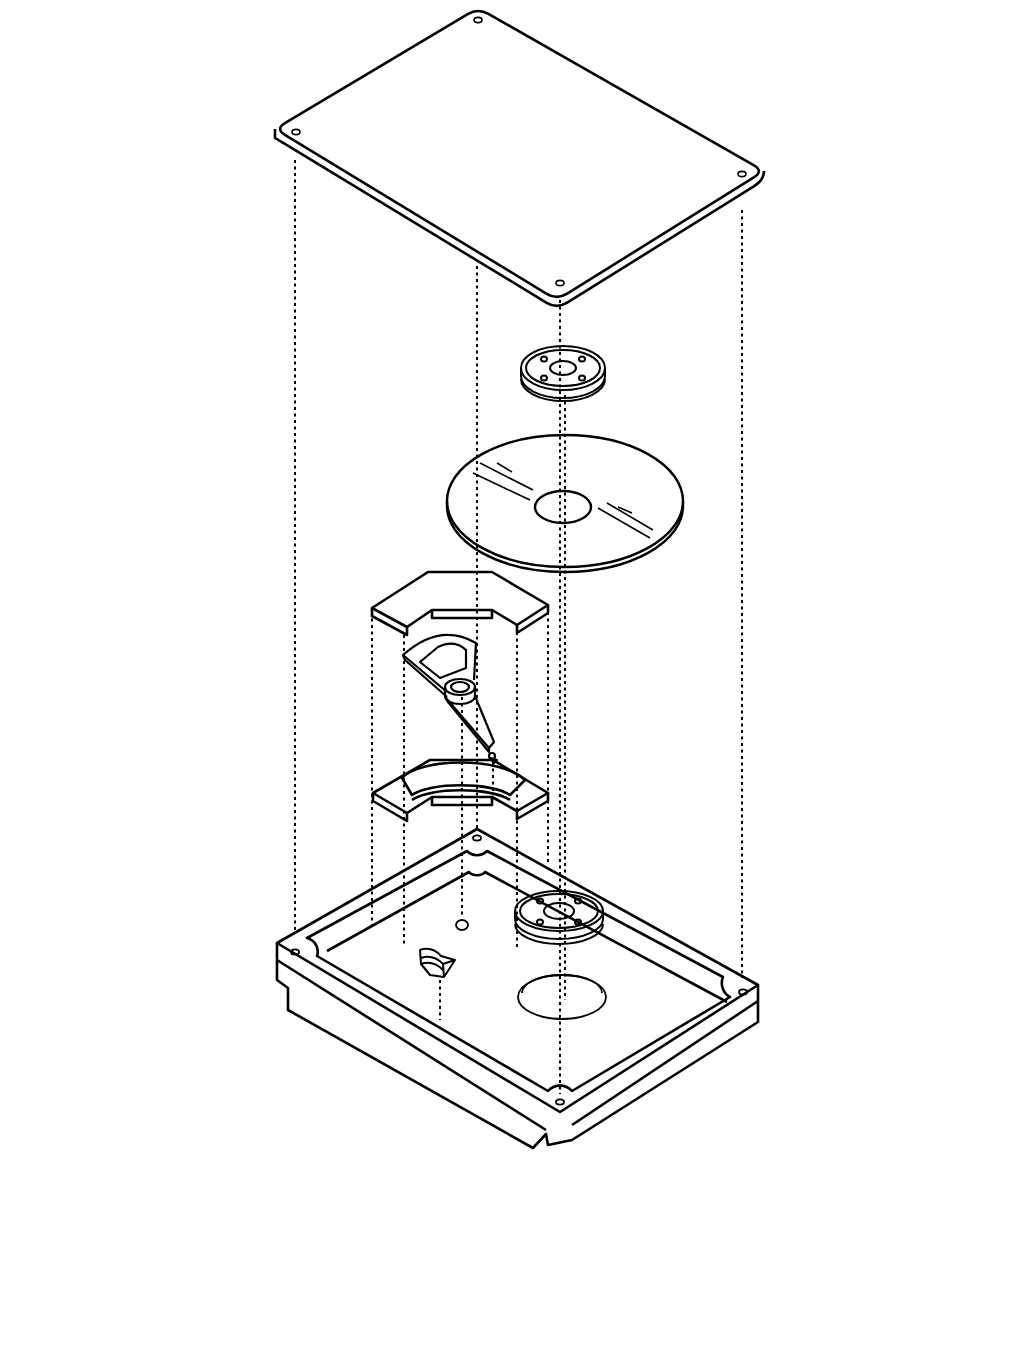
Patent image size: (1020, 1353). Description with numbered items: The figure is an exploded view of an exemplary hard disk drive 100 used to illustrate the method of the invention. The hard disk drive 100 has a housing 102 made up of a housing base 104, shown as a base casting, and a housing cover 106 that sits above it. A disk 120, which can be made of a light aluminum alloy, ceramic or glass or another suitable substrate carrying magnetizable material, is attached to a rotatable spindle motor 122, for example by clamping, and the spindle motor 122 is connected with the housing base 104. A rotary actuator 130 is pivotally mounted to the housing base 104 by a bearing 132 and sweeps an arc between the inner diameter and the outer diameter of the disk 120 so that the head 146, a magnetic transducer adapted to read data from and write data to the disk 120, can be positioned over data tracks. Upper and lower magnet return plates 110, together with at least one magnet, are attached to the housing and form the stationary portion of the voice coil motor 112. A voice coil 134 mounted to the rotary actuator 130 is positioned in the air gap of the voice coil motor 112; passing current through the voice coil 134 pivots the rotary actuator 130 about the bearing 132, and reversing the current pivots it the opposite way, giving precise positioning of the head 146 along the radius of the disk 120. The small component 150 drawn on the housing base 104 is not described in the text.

The hard disk drive 100 is at (797, 488).
The housing 102 is at (230, 166).
The housing base 104 is at (387, 1036).
The housing cover 106 is at (594, 107).
The upper and lower magnet return plates 110 is at (413, 775).
The voice coil motor 112 is at (401, 553).
The disk 120 is at (643, 480).
The spindle motor 122 is at (592, 362).
The rotary actuator 130 is at (522, 674).
The bearing 132 is at (476, 688).
The voice coil 134 is at (412, 668).
The head 146 is at (498, 757).
The latch 150 is at (413, 980).